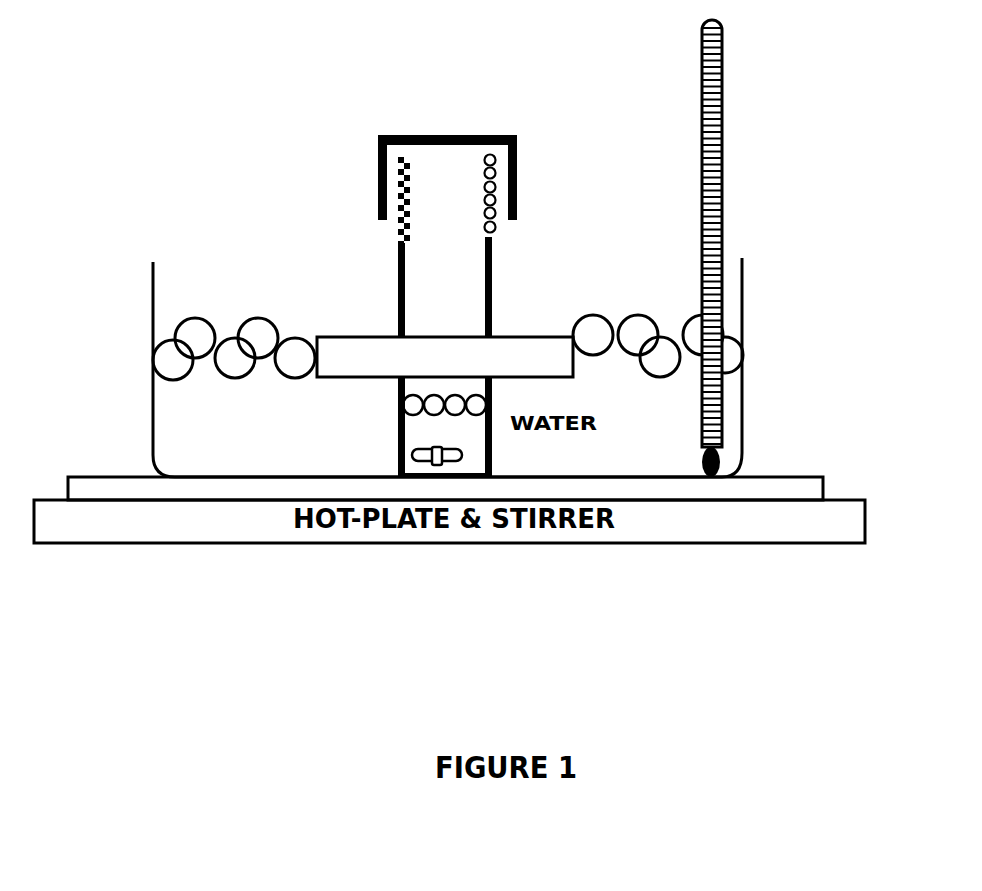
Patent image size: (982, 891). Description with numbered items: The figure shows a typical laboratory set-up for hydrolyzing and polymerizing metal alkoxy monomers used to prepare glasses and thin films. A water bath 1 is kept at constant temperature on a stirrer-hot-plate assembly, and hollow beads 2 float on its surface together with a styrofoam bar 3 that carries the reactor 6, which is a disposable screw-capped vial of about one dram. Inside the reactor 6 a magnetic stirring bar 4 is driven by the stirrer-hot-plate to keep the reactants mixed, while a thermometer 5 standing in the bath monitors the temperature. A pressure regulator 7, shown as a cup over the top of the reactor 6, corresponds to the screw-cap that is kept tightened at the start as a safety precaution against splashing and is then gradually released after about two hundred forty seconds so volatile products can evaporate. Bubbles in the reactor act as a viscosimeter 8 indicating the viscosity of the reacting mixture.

The water bath 1 is at (222, 437).
The hollow beads 2 is at (257, 338).
The styrofoam bar 3 is at (338, 357).
The magnetic stirring bar 4 is at (462, 453).
The thermometer 5 is at (722, 388).
The reactor 6 is at (492, 300).
The pressure regulator 7 is at (517, 207).
The viscosimeter 8 is at (637, 281).